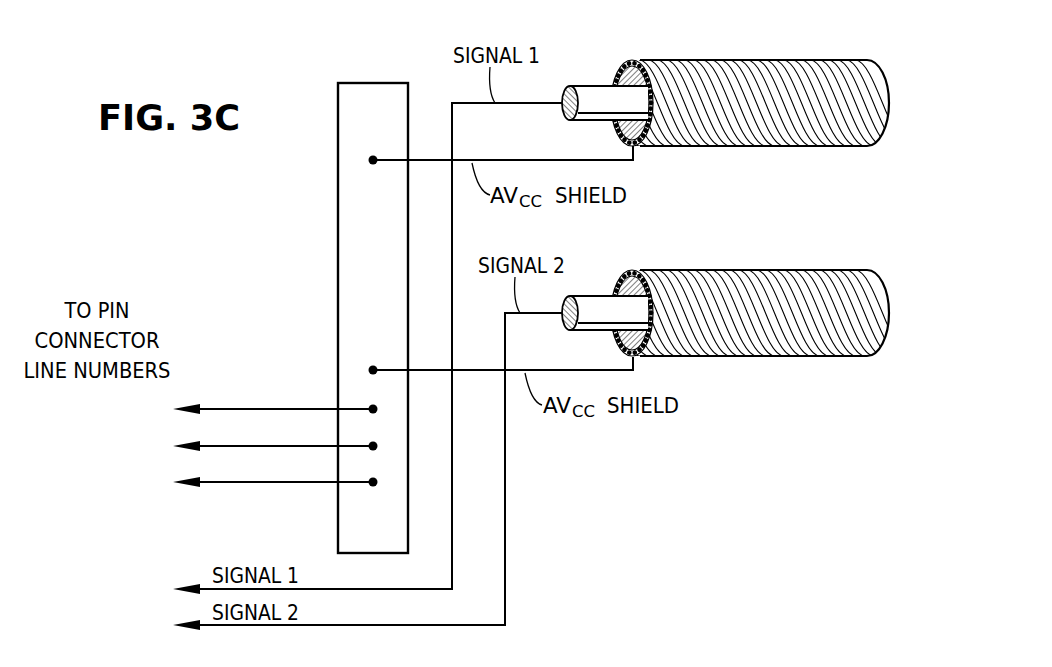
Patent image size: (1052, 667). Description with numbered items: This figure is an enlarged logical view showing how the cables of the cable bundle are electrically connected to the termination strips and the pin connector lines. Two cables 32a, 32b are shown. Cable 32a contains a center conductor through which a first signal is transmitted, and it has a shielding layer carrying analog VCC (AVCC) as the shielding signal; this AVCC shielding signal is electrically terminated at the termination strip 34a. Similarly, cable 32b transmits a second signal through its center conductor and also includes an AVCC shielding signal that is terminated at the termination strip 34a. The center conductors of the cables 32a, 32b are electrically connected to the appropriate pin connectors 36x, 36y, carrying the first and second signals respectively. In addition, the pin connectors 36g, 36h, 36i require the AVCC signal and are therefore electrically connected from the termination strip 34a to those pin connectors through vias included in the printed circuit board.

The cable 32a is at (712, 54).
The cable 32b is at (734, 265).
The termination strip 34a is at (338, 227).
The pin connector 36g is at (228, 400).
The pin connector 36h is at (228, 437).
The pin connector 36i is at (228, 473).
The pin connector 36x is at (322, 352).
The pin connector 36y is at (322, 475).